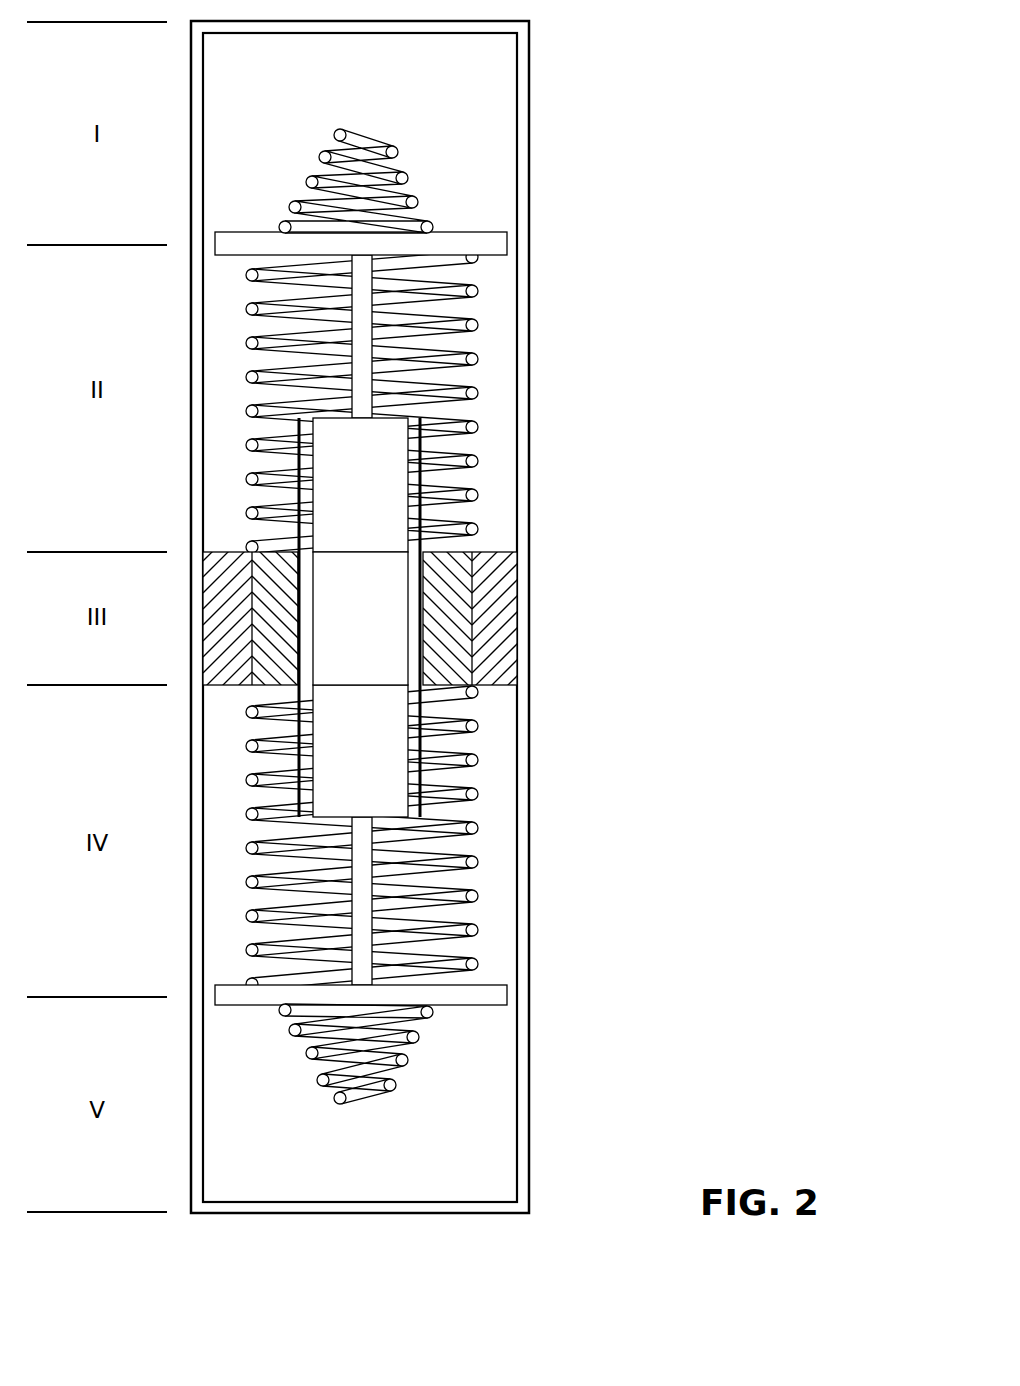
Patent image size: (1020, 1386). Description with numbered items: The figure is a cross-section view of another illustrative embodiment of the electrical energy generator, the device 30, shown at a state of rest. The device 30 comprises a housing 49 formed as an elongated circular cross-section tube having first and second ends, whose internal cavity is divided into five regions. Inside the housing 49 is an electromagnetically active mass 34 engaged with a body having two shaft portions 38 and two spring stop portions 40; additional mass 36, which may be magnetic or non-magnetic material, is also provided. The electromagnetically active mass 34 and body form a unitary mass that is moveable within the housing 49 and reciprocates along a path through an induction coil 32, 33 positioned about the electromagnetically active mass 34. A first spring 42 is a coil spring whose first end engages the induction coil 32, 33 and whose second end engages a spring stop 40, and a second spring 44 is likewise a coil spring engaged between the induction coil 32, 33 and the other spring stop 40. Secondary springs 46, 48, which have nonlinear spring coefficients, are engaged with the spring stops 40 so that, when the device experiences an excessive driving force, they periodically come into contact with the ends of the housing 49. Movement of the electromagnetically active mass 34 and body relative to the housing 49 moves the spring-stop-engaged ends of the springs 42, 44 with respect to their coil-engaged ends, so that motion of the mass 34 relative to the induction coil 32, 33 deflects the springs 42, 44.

The device 30 is at (595, 48).
The induction coil 32 is at (423, 790).
The induction coil 33 is at (492, 658).
The electromagnetically active mass 34 is at (370, 618).
The additional mass 36 is at (370, 462).
The shaft portions 38 is at (366, 348).
The spring stop portions 40 is at (492, 244).
The first spring 42 is at (452, 291).
The second spring 44 is at (452, 935).
The secondary spring 46 is at (398, 163).
The secondary spring 48 is at (395, 1050).
The housing 49 is at (490, 1207).